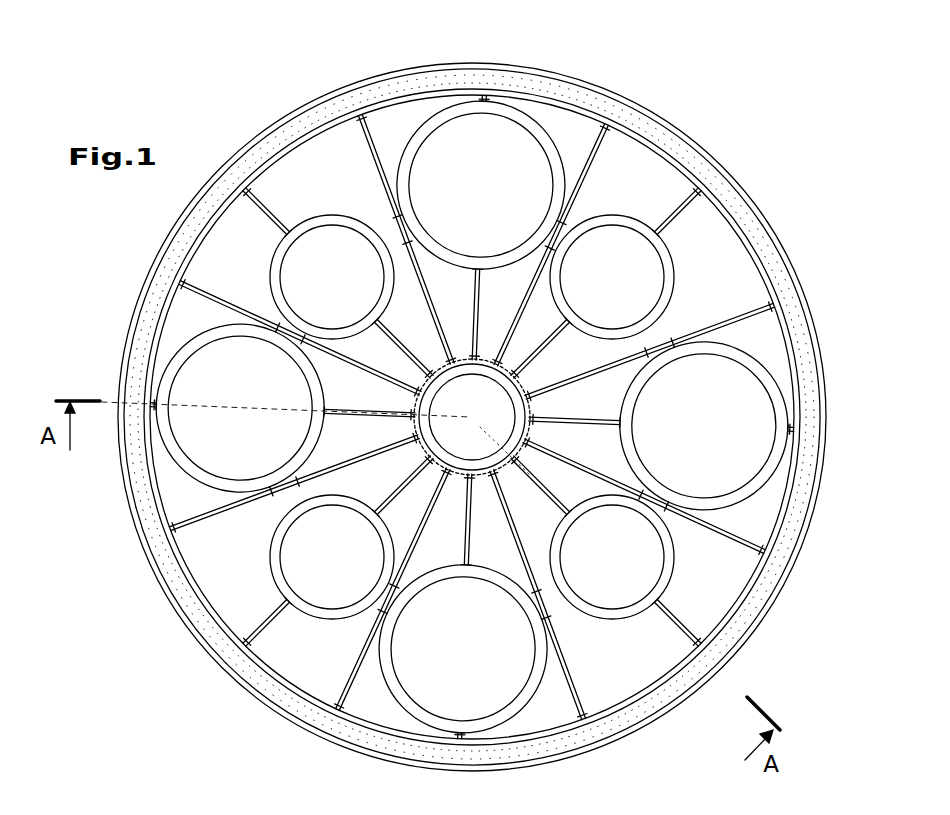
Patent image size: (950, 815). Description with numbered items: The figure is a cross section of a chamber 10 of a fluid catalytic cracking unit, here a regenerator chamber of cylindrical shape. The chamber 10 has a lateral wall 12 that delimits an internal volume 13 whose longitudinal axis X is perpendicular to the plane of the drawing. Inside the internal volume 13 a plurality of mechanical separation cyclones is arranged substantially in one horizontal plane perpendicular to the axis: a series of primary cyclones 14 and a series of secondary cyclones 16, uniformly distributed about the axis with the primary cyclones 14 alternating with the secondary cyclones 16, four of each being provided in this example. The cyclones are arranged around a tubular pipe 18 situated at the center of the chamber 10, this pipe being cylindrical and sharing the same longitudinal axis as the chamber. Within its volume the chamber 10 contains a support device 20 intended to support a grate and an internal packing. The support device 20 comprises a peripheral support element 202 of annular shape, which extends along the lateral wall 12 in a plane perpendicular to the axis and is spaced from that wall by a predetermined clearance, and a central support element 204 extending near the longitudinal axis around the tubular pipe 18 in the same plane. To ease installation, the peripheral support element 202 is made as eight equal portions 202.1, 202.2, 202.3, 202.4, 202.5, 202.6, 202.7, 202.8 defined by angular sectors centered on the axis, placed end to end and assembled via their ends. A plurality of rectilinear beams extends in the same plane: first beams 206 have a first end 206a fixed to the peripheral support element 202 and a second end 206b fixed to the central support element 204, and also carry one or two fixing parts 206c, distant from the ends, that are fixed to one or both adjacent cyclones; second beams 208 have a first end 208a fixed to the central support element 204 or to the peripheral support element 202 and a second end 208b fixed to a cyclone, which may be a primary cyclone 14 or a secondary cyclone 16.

The chamber 10 is at (494, 439).
The lateral wall 12 is at (472, 417).
The internal volume 13 is at (472, 417).
The primary cyclones 14 is at (472, 417).
The secondary cyclones 16 is at (472, 417).
The tubular pipe 18 is at (472, 417).
The support device 20 is at (472, 417).
The peripheral support element 202 is at (732, 202).
The portion of peripheral support element 202.1 is at (375, 109).
The portion of peripheral support element 202.2 is at (620, 131).
The portion of peripheral support element 202.3 is at (779, 320).
The portion of peripheral support element 202.4 is at (757, 565).
The portion of peripheral support element 202.5 is at (569, 724).
The portion of peripheral support element 202.6 is at (334, 713).
The portion of peripheral support element 202.7 is at (181, 585).
The portion of peripheral support element 202.8 is at (186, 328).
The central support element 204 is at (472, 417).
The first beams 206 is at (472, 417).
The first end of first beam 206a is at (472, 417).
The second end of first beam 206b is at (472, 417).
The fixing part 206c is at (471, 416).
The second beams 208 is at (472, 417).
The first end of second beam 208a is at (472, 417).
The second end of second beam 208b is at (612, 557).